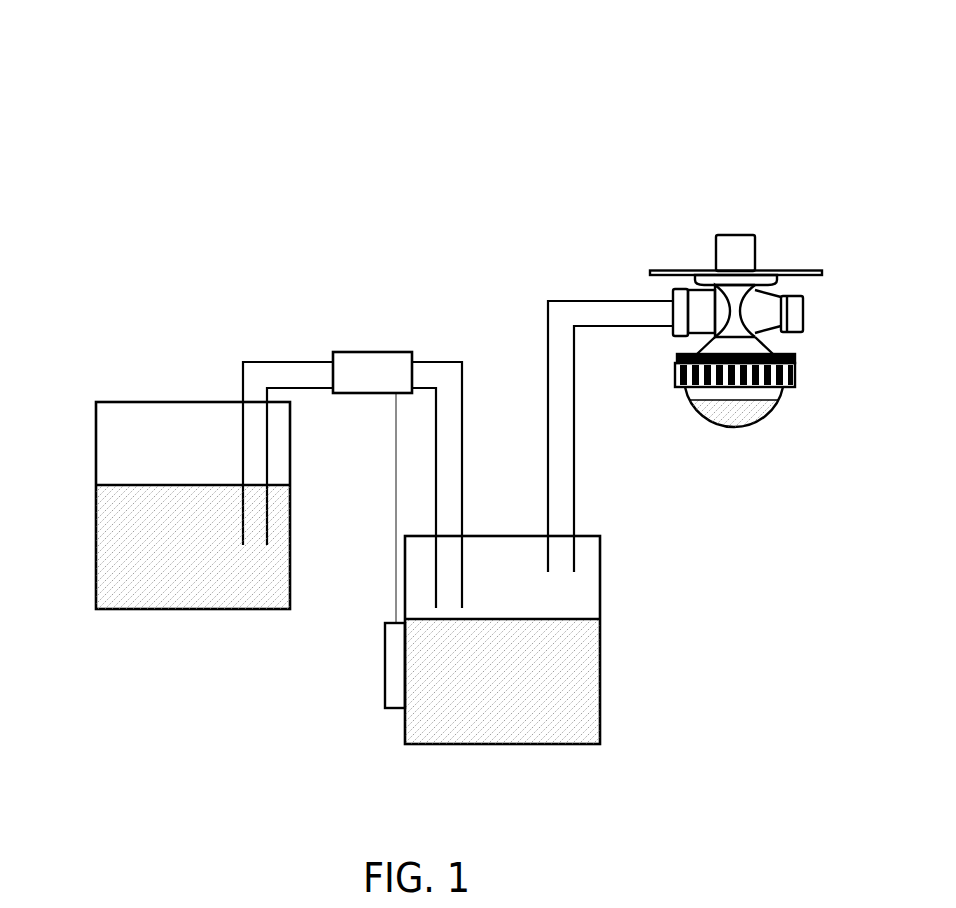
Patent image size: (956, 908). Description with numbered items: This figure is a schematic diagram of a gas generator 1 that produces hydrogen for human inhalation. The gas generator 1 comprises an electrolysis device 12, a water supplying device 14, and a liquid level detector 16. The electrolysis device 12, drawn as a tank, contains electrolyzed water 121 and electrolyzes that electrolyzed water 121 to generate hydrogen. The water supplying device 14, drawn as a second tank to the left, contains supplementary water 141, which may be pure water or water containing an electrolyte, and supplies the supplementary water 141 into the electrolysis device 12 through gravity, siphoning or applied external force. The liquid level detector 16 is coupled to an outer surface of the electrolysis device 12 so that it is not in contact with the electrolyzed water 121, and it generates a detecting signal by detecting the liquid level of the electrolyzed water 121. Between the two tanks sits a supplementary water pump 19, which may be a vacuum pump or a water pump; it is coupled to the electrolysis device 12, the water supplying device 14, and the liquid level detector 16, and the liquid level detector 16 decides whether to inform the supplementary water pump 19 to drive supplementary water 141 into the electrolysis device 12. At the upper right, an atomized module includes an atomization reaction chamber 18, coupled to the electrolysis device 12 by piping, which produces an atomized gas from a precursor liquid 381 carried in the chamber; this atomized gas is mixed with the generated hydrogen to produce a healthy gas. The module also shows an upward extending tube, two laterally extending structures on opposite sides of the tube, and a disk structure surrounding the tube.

The gas generator 1 is at (409, 110).
The electrolysis device 12 is at (602, 598).
The electrolyzed water 121 is at (553, 733).
The water supplying device 14 is at (96, 432).
The supplementary water 141 is at (202, 592).
The liquid level detector 16 is at (383, 665).
The atomization reaction chamber 18 is at (756, 245).
The supplementary water pump 19 is at (375, 363).
The precursor liquid 381 is at (758, 412).